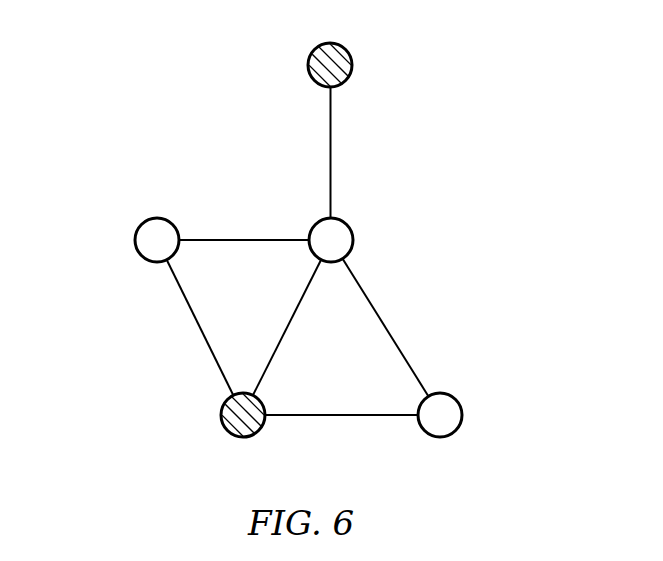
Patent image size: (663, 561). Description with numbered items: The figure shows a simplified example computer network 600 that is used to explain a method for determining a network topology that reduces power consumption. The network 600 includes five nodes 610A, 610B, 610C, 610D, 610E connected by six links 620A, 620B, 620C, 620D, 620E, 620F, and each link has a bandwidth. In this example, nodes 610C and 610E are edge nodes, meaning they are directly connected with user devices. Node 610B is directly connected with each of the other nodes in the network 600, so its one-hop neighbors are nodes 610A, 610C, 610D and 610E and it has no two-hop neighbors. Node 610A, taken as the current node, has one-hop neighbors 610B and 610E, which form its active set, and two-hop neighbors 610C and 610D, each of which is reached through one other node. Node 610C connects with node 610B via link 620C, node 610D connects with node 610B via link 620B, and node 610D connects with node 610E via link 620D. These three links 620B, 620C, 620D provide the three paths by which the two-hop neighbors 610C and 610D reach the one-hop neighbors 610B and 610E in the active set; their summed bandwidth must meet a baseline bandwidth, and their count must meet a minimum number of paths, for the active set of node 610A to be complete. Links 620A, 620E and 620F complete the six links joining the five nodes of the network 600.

The network 600 is at (181, 74).
The node 610A is at (462, 417).
The node 610B is at (353, 238).
The node 610C is at (352, 57).
The node 610D is at (134, 239).
The node 610E is at (234, 435).
The link 620A is at (387, 331).
The link 620B is at (242, 239).
The link 620C is at (332, 153).
The link 620D is at (198, 331).
The link 620E is at (291, 329).
The link 620F is at (340, 416).